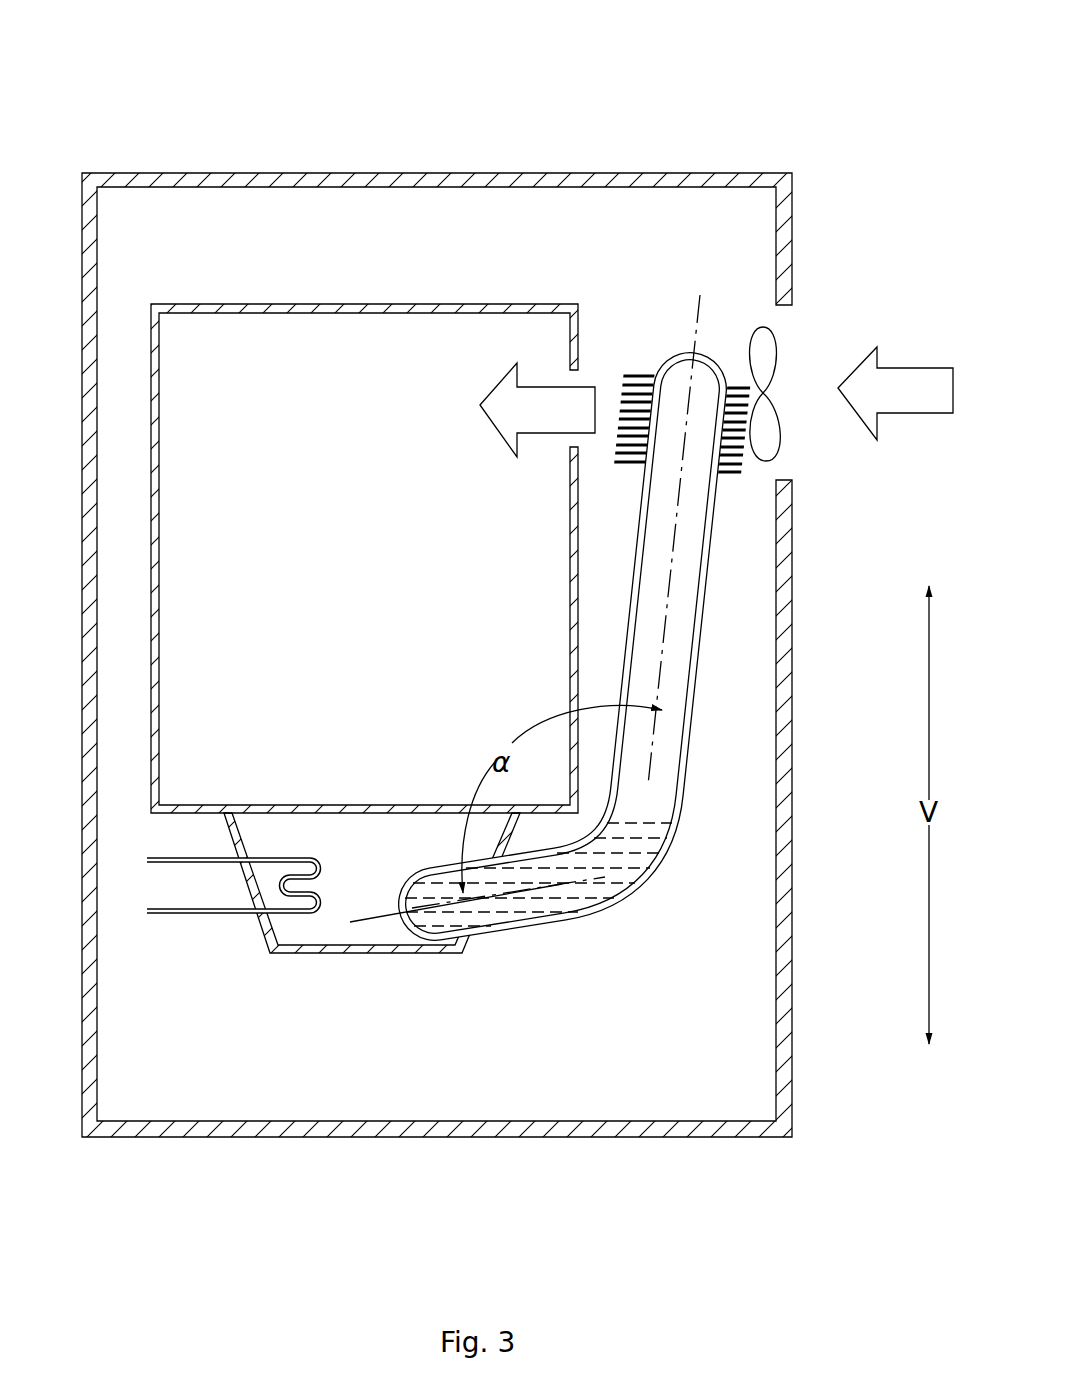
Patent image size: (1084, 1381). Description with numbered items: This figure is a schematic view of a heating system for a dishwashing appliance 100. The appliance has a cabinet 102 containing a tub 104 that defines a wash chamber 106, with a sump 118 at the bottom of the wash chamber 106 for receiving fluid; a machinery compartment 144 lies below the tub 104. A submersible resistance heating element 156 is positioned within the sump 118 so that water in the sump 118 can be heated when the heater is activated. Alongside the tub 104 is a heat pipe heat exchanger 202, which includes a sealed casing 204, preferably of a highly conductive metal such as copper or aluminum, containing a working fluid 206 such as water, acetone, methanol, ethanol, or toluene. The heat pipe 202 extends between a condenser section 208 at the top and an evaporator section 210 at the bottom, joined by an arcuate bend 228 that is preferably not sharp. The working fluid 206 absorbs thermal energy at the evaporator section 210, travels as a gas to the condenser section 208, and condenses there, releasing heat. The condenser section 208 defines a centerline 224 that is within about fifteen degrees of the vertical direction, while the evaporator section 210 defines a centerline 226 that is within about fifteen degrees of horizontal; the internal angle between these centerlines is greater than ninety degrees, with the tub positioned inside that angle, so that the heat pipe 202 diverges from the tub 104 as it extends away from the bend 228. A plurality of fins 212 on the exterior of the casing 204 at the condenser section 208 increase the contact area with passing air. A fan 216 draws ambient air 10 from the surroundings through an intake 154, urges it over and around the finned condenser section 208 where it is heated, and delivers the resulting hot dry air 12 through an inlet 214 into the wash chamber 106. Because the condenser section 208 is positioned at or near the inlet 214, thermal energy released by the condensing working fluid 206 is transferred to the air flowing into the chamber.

The dishwashing appliance 100 is at (140, 100).
The cabinet 102 is at (458, 176).
The tub 104 is at (372, 556).
The wash chamber 106 is at (247, 350).
The ambient air 10 is at (876, 382).
The hot dry air 12 is at (490, 440).
The sump 118 is at (312, 925).
The machinery compartment 144 is at (157, 1095).
The intake 154 is at (780, 327).
The submersible resistance heating element 156 is at (262, 858).
The heat pipe heat exchanger 202 is at (618, 611).
The casing 204 is at (655, 875).
The working fluid 206 is at (548, 905).
The condenser section 208 is at (663, 347).
The evaporator section 210 is at (452, 945).
The fins 212 is at (650, 380).
The inlet 214 is at (570, 447).
The fan 216 is at (747, 360).
The centerline of the condenser section 224 is at (673, 576).
The centerline of the evaporator section 226 is at (393, 917).
The bend 228 is at (630, 903).